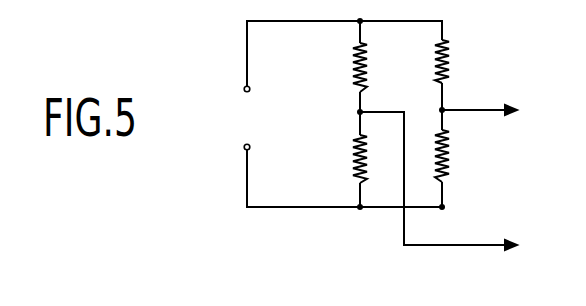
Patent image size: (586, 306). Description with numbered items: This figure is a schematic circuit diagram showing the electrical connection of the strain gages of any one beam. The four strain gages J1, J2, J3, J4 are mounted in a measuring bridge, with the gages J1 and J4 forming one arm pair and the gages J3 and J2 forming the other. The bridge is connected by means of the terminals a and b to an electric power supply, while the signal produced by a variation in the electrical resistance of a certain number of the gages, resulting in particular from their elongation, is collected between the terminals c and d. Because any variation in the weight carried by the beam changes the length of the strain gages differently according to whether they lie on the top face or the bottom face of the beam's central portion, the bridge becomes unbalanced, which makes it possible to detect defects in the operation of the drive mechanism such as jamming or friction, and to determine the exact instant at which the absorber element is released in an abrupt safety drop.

The terminal a is at (243, 87).
The terminal b is at (243, 147).
The terminal c is at (356, 112).
The terminal d is at (446, 108).
The strain gage J1 is at (354, 71).
The strain gage J2 is at (448, 155).
The strain gage J3 is at (447, 68).
The strain gage J4 is at (354, 143).